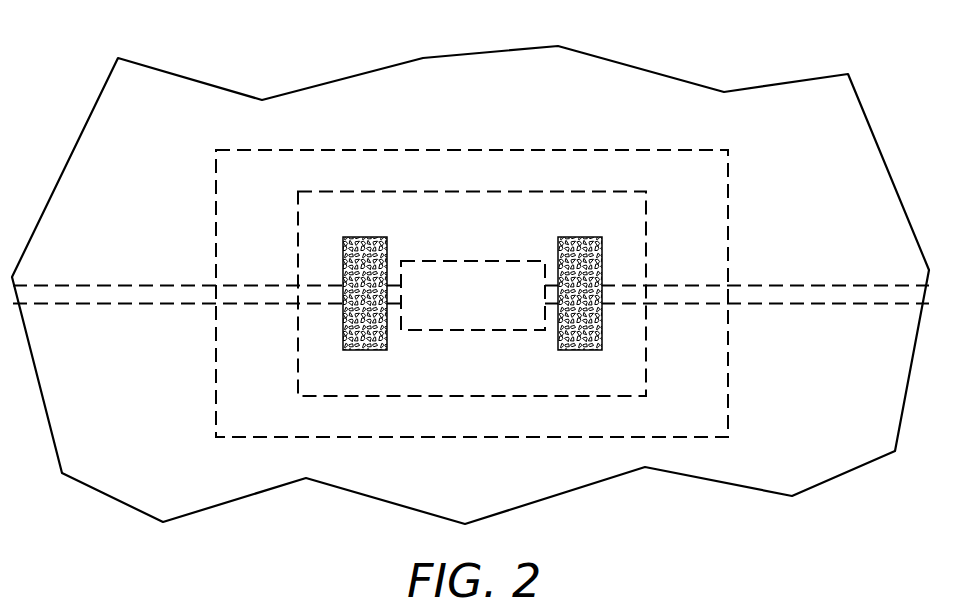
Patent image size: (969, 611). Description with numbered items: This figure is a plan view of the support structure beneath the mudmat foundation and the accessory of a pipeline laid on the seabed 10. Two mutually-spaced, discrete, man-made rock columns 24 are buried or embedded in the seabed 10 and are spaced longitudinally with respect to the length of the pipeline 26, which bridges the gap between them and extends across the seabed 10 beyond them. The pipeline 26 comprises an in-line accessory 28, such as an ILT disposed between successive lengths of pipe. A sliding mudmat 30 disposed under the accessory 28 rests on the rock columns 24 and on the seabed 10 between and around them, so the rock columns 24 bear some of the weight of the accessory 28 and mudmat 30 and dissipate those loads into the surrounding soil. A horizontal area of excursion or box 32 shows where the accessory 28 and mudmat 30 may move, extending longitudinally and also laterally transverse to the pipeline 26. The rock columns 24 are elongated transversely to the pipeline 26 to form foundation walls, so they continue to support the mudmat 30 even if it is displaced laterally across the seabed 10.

The seabed 10 is at (157, 456).
The rock columns 24 is at (352, 260).
The pipeline 26 is at (843, 306).
The accessory 28 is at (480, 332).
The sliding mudmat 30 is at (575, 190).
The box 32 is at (448, 149).